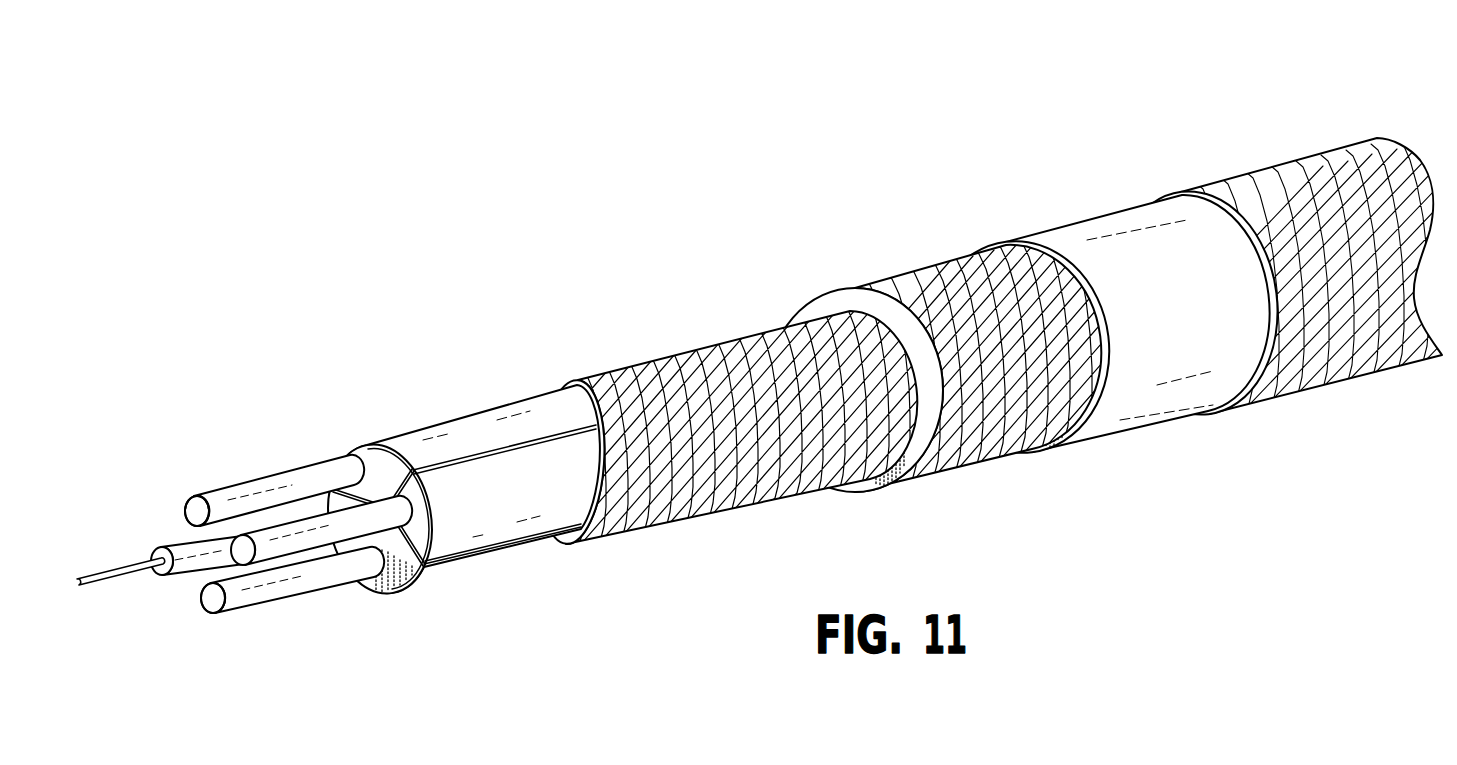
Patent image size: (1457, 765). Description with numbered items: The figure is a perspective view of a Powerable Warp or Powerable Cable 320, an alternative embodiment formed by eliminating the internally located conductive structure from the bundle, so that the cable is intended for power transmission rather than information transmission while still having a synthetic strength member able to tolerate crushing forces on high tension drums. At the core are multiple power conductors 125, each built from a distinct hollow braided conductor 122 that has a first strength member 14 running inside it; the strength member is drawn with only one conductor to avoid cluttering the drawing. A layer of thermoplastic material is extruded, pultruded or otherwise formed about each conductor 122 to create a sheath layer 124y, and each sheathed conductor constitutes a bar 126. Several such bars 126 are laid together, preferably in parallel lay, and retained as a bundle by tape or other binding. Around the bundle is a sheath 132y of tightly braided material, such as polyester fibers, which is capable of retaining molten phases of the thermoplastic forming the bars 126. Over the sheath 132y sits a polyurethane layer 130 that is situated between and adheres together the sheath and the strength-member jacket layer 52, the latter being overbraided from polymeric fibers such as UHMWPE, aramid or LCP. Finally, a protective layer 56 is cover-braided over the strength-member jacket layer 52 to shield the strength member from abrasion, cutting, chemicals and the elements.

The first strength member 14 is at (127, 563).
The hollow braided conductor 122 is at (190, 500).
The power conductors 125 is at (252, 490).
The bar 126 is at (323, 498).
The sheath layer of thermoplastic material 124y is at (393, 433).
The sheath of tightly braided material 132y is at (737, 343).
The strength-member jacket layer 52 is at (903, 273).
The polyurethane layer 130 is at (1063, 227).
The protective layer 56 is at (1253, 167).
The Powerable Cable 320 is at (1367, 138).